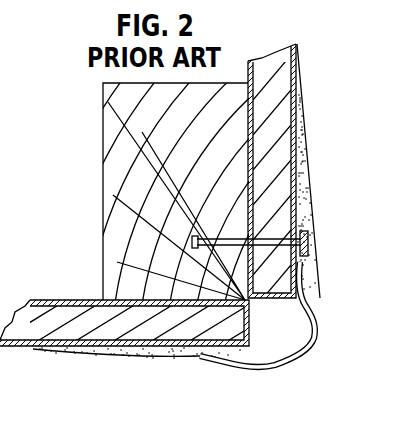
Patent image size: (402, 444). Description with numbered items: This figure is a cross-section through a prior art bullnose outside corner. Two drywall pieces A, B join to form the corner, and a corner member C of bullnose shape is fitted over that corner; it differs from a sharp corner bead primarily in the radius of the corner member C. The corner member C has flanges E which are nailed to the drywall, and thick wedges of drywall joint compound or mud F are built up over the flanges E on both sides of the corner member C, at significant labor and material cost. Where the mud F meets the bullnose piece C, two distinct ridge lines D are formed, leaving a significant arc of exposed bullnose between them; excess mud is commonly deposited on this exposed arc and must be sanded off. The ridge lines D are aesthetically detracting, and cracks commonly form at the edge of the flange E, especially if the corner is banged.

The drywall piece A is at (60, 316).
The drywall piece B is at (296, 104).
The corner member C is at (308, 329).
The ridge line D is at (316, 284).
The flange E is at (306, 218).
The joint compound wedge F is at (311, 160).